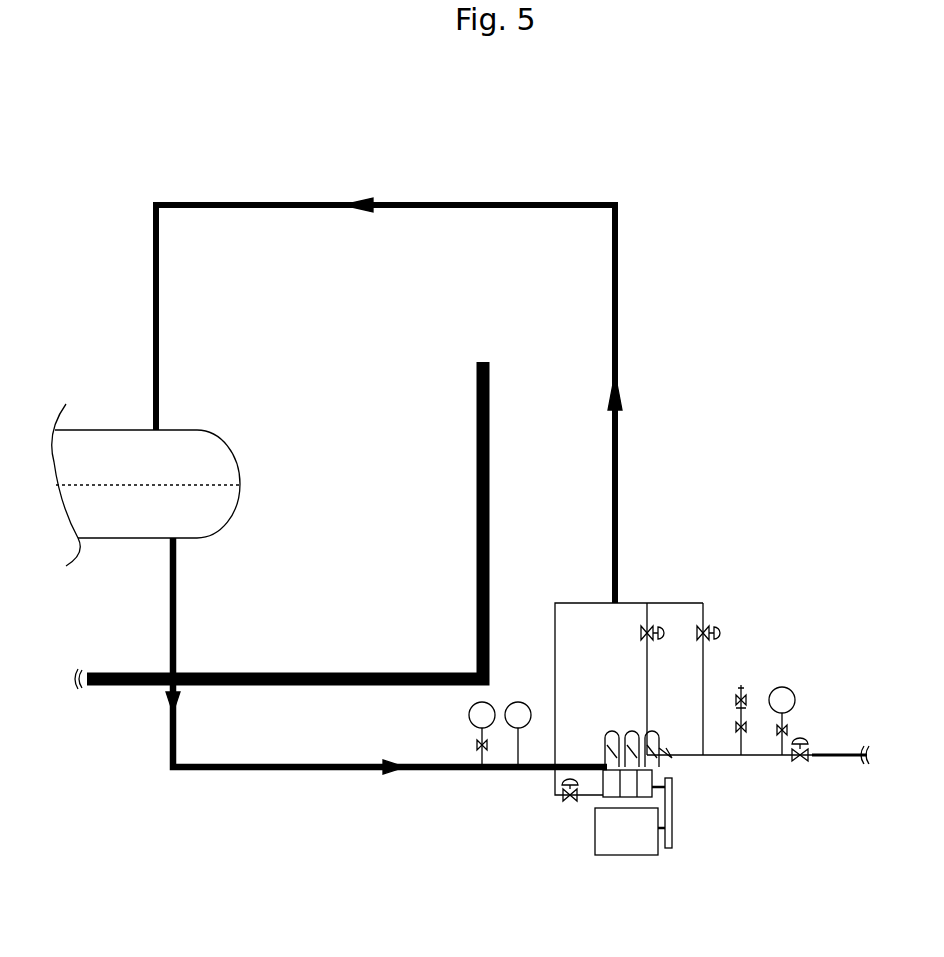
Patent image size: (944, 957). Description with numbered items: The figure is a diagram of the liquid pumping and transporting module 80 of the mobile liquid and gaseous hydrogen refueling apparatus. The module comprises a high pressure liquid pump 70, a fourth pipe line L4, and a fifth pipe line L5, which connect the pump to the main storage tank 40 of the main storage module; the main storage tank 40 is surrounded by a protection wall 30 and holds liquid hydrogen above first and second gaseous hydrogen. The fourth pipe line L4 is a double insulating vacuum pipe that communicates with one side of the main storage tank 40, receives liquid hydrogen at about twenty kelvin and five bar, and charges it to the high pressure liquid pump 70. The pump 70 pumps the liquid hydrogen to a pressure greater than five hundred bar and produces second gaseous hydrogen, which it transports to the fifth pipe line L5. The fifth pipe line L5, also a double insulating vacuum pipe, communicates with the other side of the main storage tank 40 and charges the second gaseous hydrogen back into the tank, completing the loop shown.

The liquid pumping and transporting module 80 is at (768, 129).
The main storage tank 40 is at (110, 430).
The protection wall 30 is at (477, 443).
The fourth pipe line L4 is at (170, 600).
The fifth pipe line L5 is at (620, 315).
The high pressure liquid pump 70 is at (674, 810).